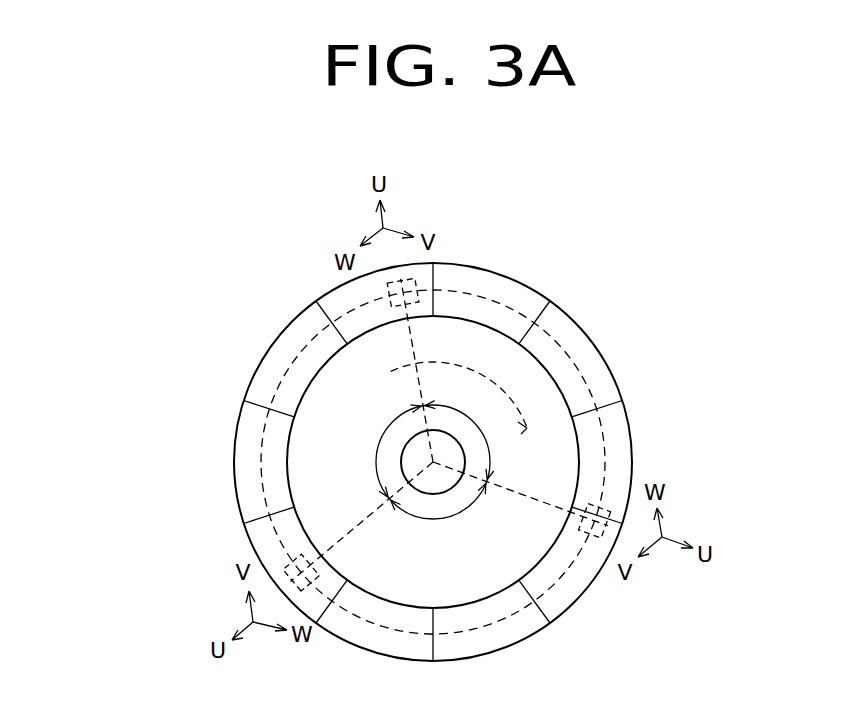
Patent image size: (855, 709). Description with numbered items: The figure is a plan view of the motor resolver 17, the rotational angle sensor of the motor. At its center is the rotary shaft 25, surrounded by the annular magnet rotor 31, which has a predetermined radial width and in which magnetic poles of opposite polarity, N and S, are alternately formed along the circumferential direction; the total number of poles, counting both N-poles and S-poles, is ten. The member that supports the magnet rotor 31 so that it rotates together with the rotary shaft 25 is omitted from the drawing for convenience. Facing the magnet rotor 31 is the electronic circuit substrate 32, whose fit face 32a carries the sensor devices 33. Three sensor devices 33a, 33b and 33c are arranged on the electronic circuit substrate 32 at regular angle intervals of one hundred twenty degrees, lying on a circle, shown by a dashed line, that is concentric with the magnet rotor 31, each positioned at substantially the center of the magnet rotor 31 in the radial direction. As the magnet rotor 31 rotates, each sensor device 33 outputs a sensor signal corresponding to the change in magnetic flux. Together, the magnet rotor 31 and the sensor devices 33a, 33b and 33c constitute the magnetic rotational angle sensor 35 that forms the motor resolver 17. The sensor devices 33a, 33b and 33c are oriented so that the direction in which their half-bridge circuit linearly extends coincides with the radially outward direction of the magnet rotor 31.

The motor resolver 17 is at (445, 423).
The magnetic rotational angle sensor 35 is at (445, 423).
The magnet rotor 31 is at (610, 368).
The electronic circuit substrate 32 is at (483, 423).
The fit face 32a is at (722, 222).
The rotary shaft 25 is at (466, 453).
The sensor devices 33 is at (486, 434).
The sensor device 33a is at (601, 533).
The sensor device 33b is at (316, 570).
The sensor device 33c is at (440, 283).